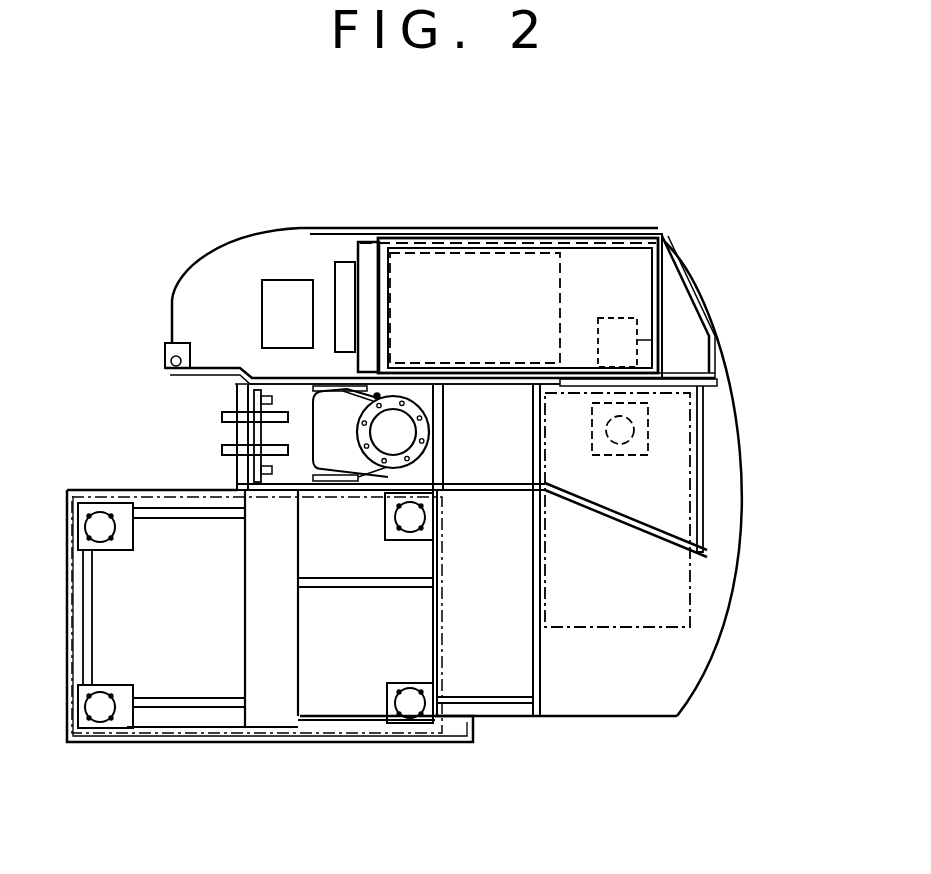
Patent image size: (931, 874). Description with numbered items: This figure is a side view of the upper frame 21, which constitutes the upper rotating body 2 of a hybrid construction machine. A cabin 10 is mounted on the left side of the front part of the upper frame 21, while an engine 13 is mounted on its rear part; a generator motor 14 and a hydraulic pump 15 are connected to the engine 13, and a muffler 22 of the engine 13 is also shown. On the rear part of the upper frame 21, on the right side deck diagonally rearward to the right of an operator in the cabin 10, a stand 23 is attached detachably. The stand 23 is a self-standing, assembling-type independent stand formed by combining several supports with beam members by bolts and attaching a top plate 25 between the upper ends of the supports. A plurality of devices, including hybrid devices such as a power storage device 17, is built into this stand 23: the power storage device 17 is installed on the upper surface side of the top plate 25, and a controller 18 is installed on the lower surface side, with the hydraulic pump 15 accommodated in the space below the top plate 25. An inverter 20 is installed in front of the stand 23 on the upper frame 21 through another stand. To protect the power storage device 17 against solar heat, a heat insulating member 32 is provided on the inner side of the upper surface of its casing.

The upper rotating body 2 is at (343, 746).
The cabin 10 is at (183, 745).
The engine 13 is at (690, 585).
The generator motor 14 is at (700, 387).
The hydraulic pump 15 is at (652, 340).
The power storage device 17 is at (625, 248).
The controller 18 is at (538, 270).
The inverter 20 is at (277, 280).
The upper frame 21 is at (608, 717).
The muffler 22 is at (648, 430).
The stand 23 is at (680, 265).
The top plate 25 is at (473, 243).
The heat insulating member 32 is at (345, 262).